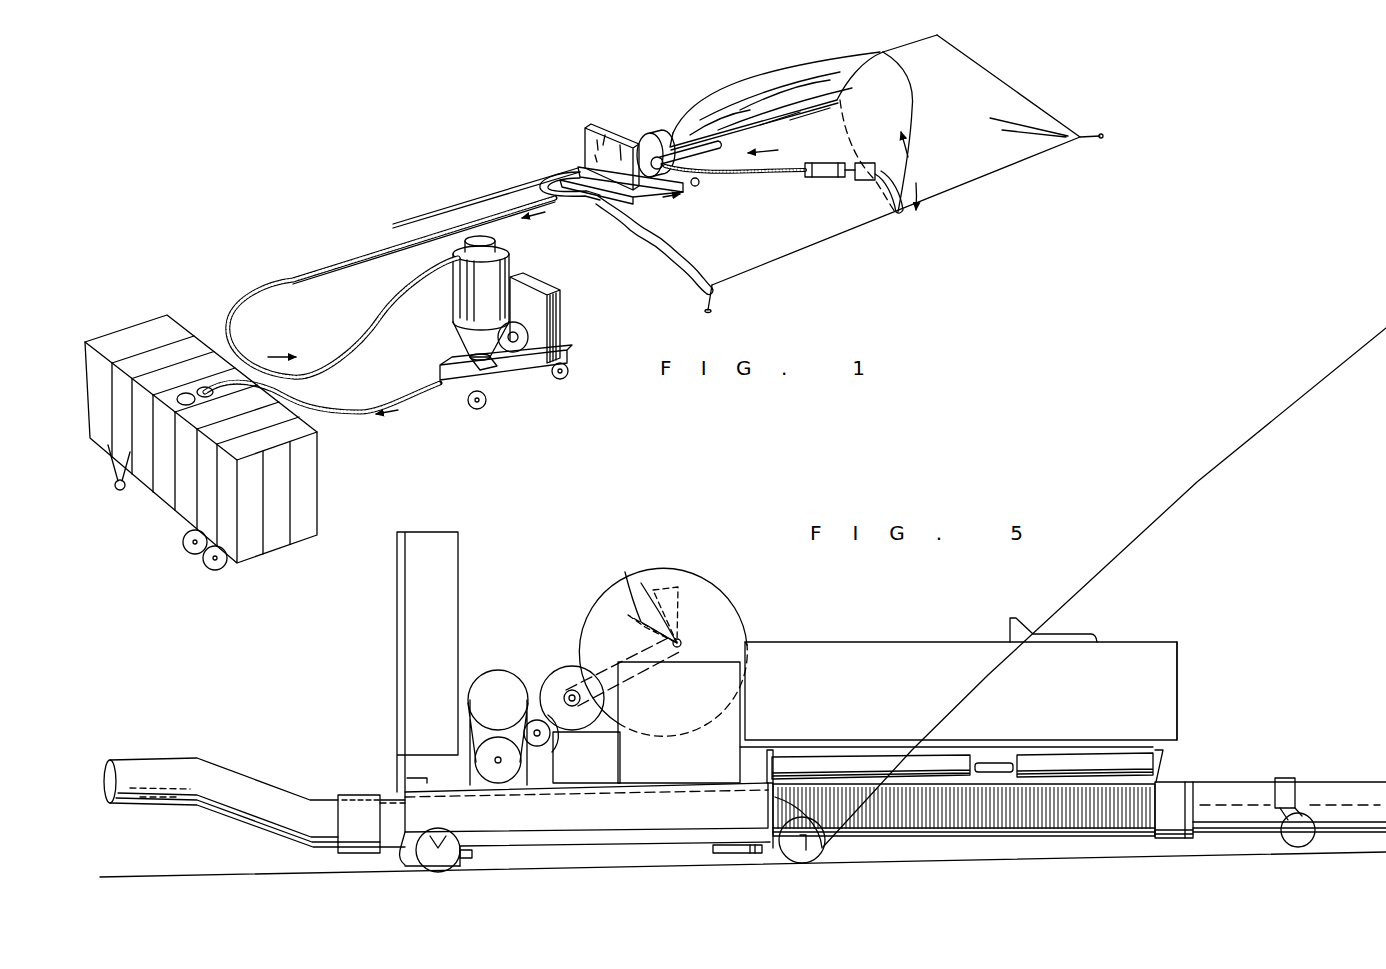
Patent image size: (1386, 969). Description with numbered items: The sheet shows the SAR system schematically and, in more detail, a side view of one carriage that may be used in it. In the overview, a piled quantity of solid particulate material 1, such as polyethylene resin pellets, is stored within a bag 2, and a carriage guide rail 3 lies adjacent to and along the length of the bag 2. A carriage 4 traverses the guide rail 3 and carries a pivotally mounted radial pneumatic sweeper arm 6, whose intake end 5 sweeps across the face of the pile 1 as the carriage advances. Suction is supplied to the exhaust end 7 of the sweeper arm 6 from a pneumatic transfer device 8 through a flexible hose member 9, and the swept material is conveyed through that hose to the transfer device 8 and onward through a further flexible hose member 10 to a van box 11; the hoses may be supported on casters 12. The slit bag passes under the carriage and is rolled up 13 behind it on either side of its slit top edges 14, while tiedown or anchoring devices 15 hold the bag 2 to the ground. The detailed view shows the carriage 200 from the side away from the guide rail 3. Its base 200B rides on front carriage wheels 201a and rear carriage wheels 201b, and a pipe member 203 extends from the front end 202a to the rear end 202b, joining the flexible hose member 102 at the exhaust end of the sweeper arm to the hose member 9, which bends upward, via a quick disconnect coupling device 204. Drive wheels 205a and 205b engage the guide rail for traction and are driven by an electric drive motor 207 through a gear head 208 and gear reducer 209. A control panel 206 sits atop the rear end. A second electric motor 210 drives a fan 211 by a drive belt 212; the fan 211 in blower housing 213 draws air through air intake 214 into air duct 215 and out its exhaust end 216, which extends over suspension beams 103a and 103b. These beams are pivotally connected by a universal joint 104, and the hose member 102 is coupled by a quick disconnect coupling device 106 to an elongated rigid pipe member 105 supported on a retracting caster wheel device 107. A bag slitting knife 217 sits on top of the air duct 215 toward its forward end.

In FIG. 1, the piled quantity of solid particulate material 1 is at (986, 66).
In FIG. 1, the bag 2 is at (840, 60).
In FIG. 5, the bag 2 is at (1351, 357).
In FIG. 1, the carriage guide rail 3 is at (563, 176).
In FIG. 1, the carriage 4 is at (645, 138).
In FIG. 1, the intake end 5 is at (890, 212).
In FIG. 1, the radial pneumatic sweeper arm 6 is at (830, 180).
In FIG. 1, the exhaust end 7 is at (690, 165).
In FIG. 1, the pneumatic transfer device 8 is at (549, 310).
In FIG. 1, the flexible hose member 9 is at (302, 280).
In FIG. 5, the flexible hose member 9 is at (216, 770).
In FIG. 1, the flexible hose member 10 is at (368, 411).
In FIG. 1, the van box 11 is at (308, 480).
In FIG. 1, the casters 12 is at (476, 222).
In FIG. 1, the rolled up bag 13 is at (682, 272).
In FIG. 1, the slit top edges 14 is at (560, 198).
In FIG. 1, the tiedown or anchoring devices 15 is at (1100, 140).
In FIG. 5, the flexible hose member 102 is at (970, 822).
In FIG. 5, the suspension beam 103a is at (845, 768).
In FIG. 5, the suspension beam 103b is at (1077, 762).
In FIG. 5, the universal joint 104 is at (992, 762).
In FIG. 5, the elongated rigid pipe member 105 is at (1240, 792).
In FIG. 5, the quick disconnect coupling device 106 is at (1177, 785).
In FIG. 5, the retracting caster wheel device 107 is at (1285, 778).
In FIG. 5, the carriage 200 is at (405, 772).
In FIG. 5, the base 200B is at (407, 830).
In FIG. 5, the front carriage wheels 201a is at (807, 864).
In FIG. 5, the rear carriage wheels 201b is at (435, 852).
In FIG. 5, the front end 202a is at (777, 856).
In FIG. 5, the rear end 202b is at (400, 829).
In FIG. 5, the pipe member 203 is at (540, 848).
In FIG. 5, the quick disconnect coupling device 204 is at (356, 785).
In FIG. 5, the drive wheel 205a is at (713, 850).
In FIG. 5, the drive wheel 205b is at (463, 860).
In FIG. 5, the control panel 206 is at (398, 640).
In FIG. 5, the electric drive motor 207 is at (497, 677).
In FIG. 5, the gear head 208 is at (537, 714).
In FIG. 5, the gear reducer 209 is at (603, 775).
In FIG. 5, the second electric motor 210 is at (565, 667).
In FIG. 5, the fan 211 is at (640, 583).
In FIG. 5, the drive belt 212 is at (642, 649).
In FIG. 5, the blower housing 213 is at (703, 567).
In FIG. 5, the air intake 214 is at (722, 658).
In FIG. 5, the air duct 215 is at (912, 699).
In FIG. 5, the exhaust end 216 is at (1178, 665).
In FIG. 5, the bag slitting knife 217 is at (1007, 627).